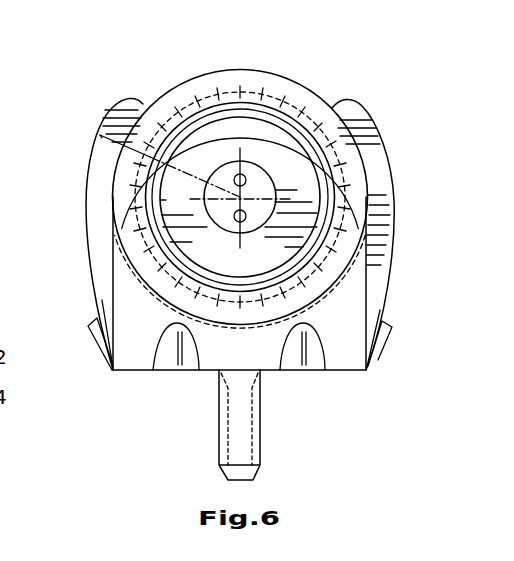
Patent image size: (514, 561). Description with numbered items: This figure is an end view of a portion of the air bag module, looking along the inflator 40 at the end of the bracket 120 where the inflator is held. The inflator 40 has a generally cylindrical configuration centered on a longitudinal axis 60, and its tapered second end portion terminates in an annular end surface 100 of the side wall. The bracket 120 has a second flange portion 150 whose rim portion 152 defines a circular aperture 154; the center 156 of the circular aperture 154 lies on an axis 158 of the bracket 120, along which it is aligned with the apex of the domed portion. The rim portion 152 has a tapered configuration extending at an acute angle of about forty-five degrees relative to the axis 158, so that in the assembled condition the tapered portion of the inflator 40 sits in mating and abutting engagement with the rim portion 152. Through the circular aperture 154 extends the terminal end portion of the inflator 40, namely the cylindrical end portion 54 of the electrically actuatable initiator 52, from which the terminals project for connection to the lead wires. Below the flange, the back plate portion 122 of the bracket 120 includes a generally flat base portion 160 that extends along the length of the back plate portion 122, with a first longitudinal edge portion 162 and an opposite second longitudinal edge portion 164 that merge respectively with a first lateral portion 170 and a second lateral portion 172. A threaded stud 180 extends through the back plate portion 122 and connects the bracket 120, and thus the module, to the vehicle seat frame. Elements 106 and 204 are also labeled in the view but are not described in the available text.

The inflator 40 is at (255, 70).
The initiator 52 is at (233, 127).
The cylindrical end portion 54 is at (214, 150).
The longitudinal axis 60 is at (100, 135).
The annular end surface 100 is at (110, 208).
The housing side wall 106 is at (110, 187).
The bracket 120 is at (147, 343).
The back plate portion 122 is at (357, 372).
The second flange portion 150 is at (347, 248).
The rim portion 152 is at (338, 135).
The circular aperture 154 is at (212, 118).
The center 156 is at (195, 177).
The axis 158 is at (101, 136).
The base portion 160 is at (338, 363).
The first longitudinal edge portion 162 is at (368, 370).
The second longitudinal edge portion 164 is at (112, 372).
The first lateral portion 170 is at (390, 333).
The second lateral portion 172 is at (102, 343).
The threaded stud 180 is at (243, 440).
The ring flange 204 is at (280, 110).